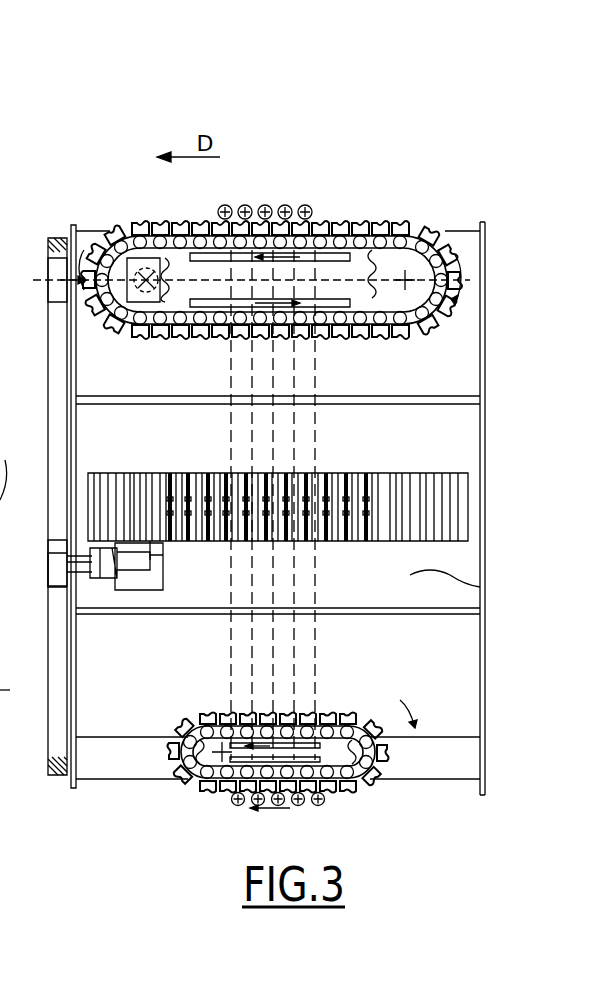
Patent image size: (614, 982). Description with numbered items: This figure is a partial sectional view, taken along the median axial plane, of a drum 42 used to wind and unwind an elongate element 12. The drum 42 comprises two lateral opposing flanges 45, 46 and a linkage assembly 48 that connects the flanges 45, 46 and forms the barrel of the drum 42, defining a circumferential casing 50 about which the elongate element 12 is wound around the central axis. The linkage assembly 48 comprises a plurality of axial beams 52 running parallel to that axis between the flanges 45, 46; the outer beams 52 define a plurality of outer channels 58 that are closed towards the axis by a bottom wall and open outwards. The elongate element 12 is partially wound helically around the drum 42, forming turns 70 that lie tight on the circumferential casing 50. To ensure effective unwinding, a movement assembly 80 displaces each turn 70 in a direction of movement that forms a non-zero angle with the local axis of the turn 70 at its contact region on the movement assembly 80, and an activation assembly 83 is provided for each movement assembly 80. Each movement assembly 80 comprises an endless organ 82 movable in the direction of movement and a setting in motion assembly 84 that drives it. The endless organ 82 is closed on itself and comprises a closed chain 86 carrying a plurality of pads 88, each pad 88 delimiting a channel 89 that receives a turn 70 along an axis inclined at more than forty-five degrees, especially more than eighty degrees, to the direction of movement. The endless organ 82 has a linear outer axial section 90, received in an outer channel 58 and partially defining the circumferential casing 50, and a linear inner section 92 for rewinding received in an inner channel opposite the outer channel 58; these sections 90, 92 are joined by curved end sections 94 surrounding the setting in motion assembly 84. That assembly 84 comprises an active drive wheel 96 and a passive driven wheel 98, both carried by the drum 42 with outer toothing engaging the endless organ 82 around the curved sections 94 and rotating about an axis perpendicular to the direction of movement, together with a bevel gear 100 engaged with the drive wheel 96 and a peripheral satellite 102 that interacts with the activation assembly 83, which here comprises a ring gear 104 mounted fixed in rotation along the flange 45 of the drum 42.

The elongate element 12 is at (248, 185).
The drum 42 is at (500, 410).
The flange 45 is at (66, 714).
The flange 46 is at (483, 452).
The linkage assembly 48 is at (425, 800).
The circumferential casing 50 is at (360, 185).
The outer beam 52 is at (456, 396).
The outer channel 58 is at (471, 584).
The turn 70 is at (262, 205).
The movement assembly 80 is at (298, 278).
The endless organ 82 is at (432, 220).
The activation assembly 83 is at (20, 235).
The setting in motion assembly 84 is at (400, 380).
The closed chain 86 is at (176, 345).
The pad 88 is at (200, 722).
The channel 89 is at (350, 220).
The outer axial section 90 is at (370, 218).
The inner section 92 is at (350, 398).
The curved end section 94 is at (440, 256).
The drive wheel 96 is at (133, 222).
The driven wheel 98 is at (415, 220).
The bevel gear 100 is at (120, 590).
The peripheral satellite 102 is at (58, 560).
The ring gear 104 is at (50, 240).